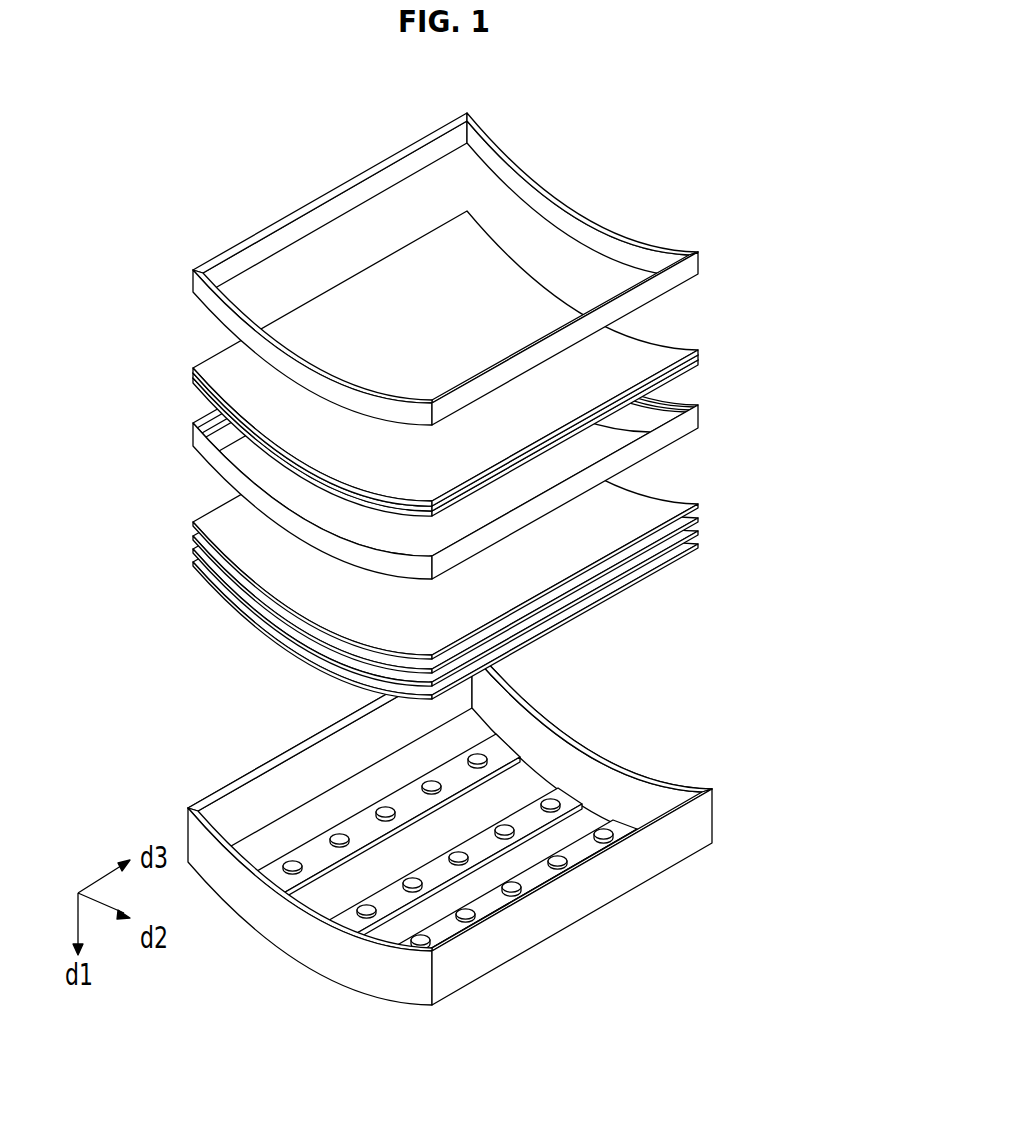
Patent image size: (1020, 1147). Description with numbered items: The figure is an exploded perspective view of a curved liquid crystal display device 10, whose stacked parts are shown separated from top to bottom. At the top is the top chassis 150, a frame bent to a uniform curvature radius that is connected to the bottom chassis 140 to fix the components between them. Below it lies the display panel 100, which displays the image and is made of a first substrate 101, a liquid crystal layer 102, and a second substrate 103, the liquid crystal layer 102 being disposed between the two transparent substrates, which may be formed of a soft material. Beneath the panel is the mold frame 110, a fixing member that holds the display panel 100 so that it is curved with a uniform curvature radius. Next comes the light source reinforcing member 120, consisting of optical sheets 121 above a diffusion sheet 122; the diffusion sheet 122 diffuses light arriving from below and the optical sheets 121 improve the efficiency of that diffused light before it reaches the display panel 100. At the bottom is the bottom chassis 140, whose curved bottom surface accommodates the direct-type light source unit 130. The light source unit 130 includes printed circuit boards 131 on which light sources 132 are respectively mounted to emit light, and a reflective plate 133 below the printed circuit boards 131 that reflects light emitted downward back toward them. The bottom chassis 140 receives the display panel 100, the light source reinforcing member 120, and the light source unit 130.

The LCD device 10 is at (482, 76).
The display panel 100 is at (509, 363).
The first substrate 101 is at (672, 345).
The liquid crystal layer 102 is at (698, 362).
The second substrate 103 is at (673, 380).
The mold frame 110 is at (695, 416).
The light source reinforcing member 120 is at (508, 532).
The optical sheets 121 is at (699, 508).
The diffusion sheet 122 is at (699, 546).
The light source unit 130 is at (475, 862).
The printed circuit boards 131 is at (474, 860).
The light sources 132 is at (492, 847).
The reflective plate 133 is at (552, 847).
The bottom chassis 140 is at (458, 835).
The top chassis 150 is at (699, 264).